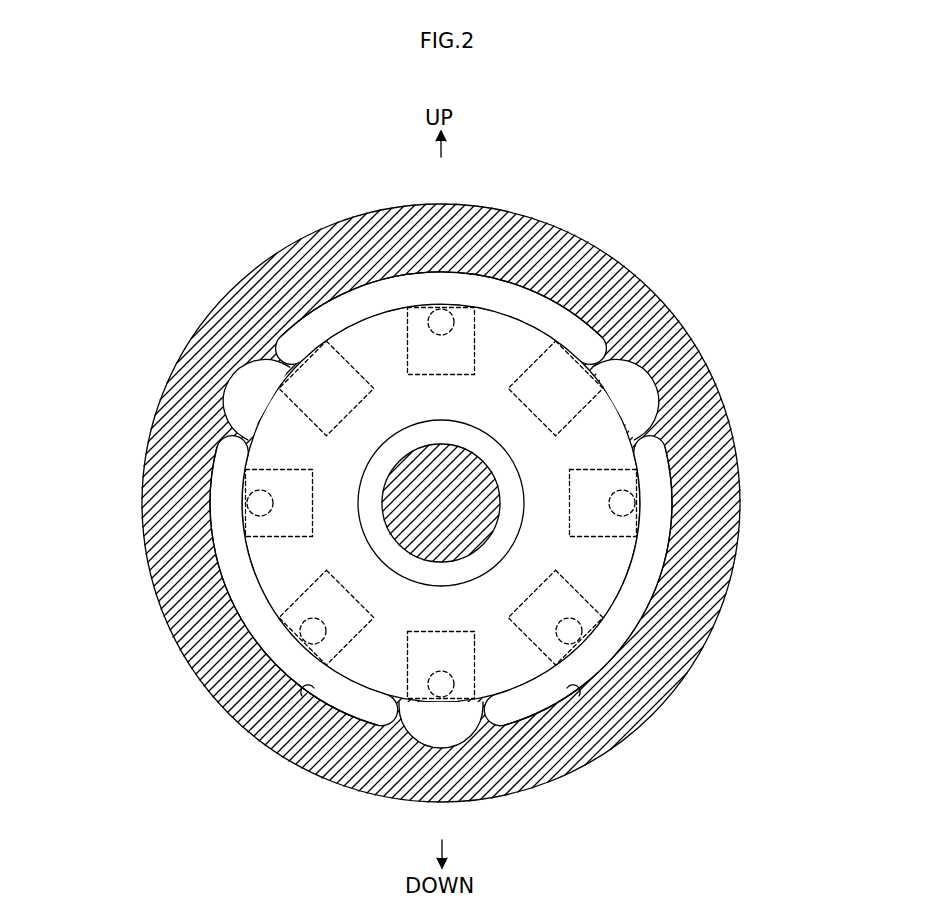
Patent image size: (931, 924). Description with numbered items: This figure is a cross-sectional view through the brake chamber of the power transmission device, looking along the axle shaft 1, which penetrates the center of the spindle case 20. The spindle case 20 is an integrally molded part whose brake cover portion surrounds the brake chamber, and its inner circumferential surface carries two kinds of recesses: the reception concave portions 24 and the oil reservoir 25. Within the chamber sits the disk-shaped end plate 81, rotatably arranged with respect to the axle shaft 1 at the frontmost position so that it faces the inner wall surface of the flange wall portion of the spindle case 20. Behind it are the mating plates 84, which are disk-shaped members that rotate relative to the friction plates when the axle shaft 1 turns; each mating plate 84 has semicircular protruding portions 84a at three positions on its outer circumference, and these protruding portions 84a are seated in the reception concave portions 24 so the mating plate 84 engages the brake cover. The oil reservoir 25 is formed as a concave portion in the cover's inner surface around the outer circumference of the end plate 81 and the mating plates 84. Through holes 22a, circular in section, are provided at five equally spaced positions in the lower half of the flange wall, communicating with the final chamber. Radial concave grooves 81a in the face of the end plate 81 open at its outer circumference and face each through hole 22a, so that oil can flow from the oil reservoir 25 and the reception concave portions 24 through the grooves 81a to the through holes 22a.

The axle shaft 1 is at (235, 640).
The spindle case 20 is at (187, 400).
The through hole 22a is at (245, 503).
The reception concave portion 24 is at (250, 378).
The oil reservoir 25 is at (305, 697).
The end plate 81 is at (405, 527).
The concave groove 81a is at (240, 524).
The mating plate 84 is at (365, 688).
The protruding portion 84a is at (232, 378).